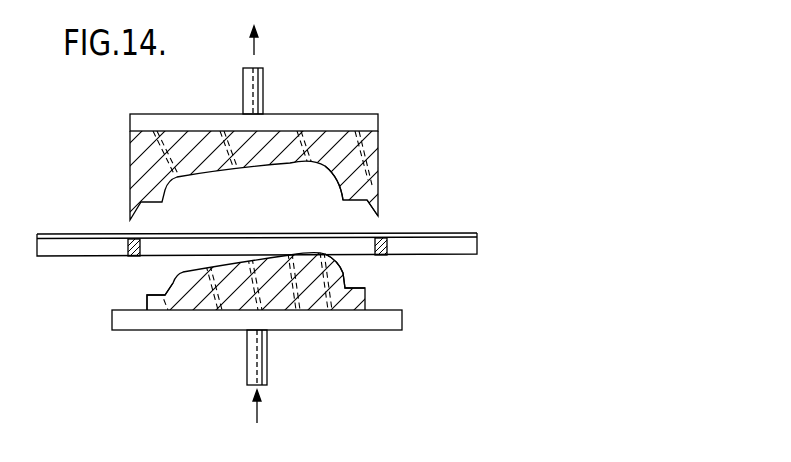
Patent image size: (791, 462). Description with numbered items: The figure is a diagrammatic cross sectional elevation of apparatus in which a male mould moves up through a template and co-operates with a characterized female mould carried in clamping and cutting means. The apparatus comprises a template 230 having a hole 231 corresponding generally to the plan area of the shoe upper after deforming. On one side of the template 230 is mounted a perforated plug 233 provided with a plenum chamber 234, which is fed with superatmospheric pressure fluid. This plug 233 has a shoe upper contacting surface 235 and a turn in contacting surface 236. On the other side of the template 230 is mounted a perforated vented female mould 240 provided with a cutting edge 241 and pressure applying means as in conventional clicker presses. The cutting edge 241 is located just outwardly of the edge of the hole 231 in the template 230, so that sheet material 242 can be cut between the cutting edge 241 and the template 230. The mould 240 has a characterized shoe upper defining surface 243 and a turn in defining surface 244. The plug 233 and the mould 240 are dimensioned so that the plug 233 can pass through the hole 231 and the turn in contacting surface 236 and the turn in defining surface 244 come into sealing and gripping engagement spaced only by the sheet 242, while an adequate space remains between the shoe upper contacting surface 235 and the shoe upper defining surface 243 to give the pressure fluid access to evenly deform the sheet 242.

The perforated vented female mould 240 is at (331, 137).
The shoe upper defining surface 243 is at (358, 172).
The turn in defining surface 244 is at (361, 193).
The cutting edge 241 is at (379, 208).
The sheet material 242 is at (445, 232).
The template 230 is at (65, 257).
The hole 231 is at (387, 255).
The perforated plug 233 is at (307, 302).
The turn in contacting surface 236 is at (164, 290).
The shoe upper contacting surface 235 is at (343, 262).
The plenum chamber 234 is at (368, 330).